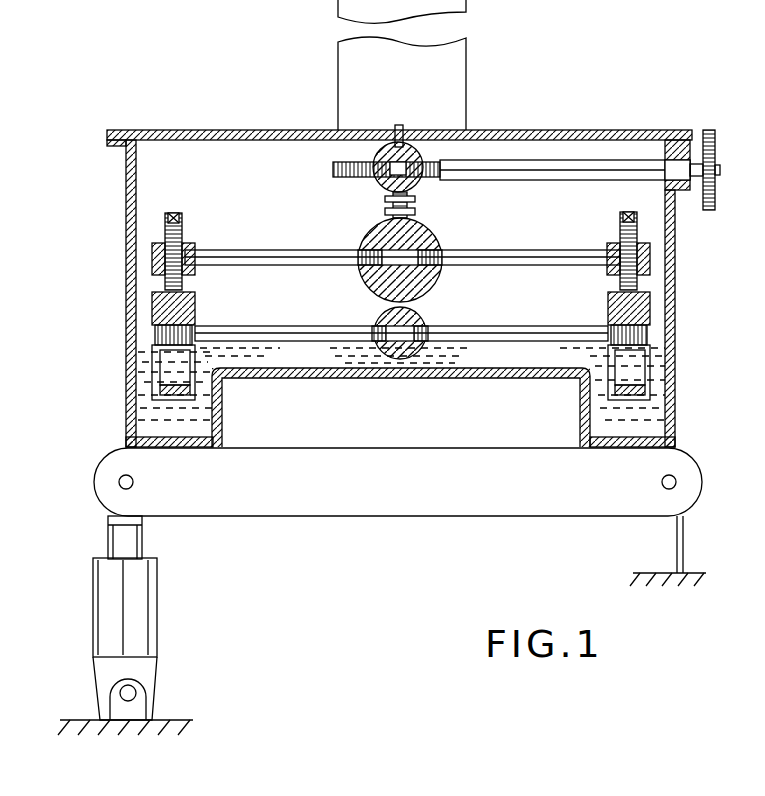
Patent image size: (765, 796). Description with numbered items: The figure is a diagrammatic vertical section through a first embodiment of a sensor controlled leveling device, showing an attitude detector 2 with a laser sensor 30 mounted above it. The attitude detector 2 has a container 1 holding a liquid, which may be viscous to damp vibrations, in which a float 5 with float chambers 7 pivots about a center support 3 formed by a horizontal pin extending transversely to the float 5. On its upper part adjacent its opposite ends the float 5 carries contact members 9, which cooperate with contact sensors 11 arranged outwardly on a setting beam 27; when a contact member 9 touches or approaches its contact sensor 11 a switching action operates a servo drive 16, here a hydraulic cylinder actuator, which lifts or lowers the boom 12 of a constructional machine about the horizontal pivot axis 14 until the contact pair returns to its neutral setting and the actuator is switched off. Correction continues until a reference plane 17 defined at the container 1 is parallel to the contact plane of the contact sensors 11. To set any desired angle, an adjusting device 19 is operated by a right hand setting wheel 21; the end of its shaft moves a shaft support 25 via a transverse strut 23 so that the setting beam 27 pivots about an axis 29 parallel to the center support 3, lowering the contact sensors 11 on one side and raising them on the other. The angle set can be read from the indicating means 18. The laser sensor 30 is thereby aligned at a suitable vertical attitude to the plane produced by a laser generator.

The container 1 is at (266, 380).
The attitude detector 2 is at (566, 118).
The center support 3 is at (396, 362).
The float 5 is at (258, 292).
The float chambers 7 is at (180, 380).
The contact members 9 is at (188, 296).
The contact sensors 11 is at (182, 232).
The boom 12 is at (407, 500).
The horizontal pivot axis 14 is at (668, 490).
The servo drive 16 is at (157, 596).
The reference plane 17 is at (155, 130).
The indicating means 18 is at (398, 125).
The adjusting device 19 is at (426, 162).
The setting wheel 21 is at (721, 152).
The transverse strut 23 is at (410, 205).
The shaft support 25 is at (372, 233).
The setting beam 27 is at (287, 268).
The axis 29 is at (370, 290).
The laser sensor 30 is at (480, 42).